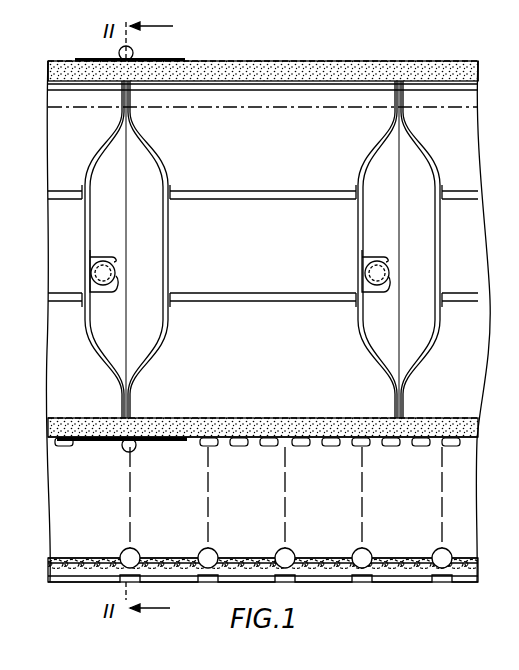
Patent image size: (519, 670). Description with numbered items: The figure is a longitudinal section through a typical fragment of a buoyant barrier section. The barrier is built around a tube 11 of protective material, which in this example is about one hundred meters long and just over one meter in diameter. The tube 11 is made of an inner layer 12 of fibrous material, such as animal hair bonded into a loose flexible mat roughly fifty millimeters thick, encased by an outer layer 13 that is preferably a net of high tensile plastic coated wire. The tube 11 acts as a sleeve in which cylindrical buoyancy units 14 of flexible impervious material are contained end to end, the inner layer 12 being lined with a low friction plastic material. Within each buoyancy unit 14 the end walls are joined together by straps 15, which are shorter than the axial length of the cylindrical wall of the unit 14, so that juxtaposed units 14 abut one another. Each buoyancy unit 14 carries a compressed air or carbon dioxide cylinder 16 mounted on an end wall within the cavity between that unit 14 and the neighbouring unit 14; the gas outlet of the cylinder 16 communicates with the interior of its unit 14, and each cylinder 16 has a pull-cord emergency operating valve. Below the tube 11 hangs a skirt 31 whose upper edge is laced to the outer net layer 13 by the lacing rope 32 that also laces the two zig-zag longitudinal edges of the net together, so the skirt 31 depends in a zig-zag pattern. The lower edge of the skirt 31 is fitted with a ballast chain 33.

The tube 11 is at (311, 62).
The inner layer 12 is at (403, 61).
The outer layer 13 is at (246, 61).
The buoyancy unit 14 is at (57, 61).
The strap 15 is at (270, 192).
The compressed air or CO2 cylinder 16 is at (114, 288).
The skirt 31 is at (76, 510).
The lacing rope 32 is at (455, 442).
The ballast chain 33 is at (442, 575).